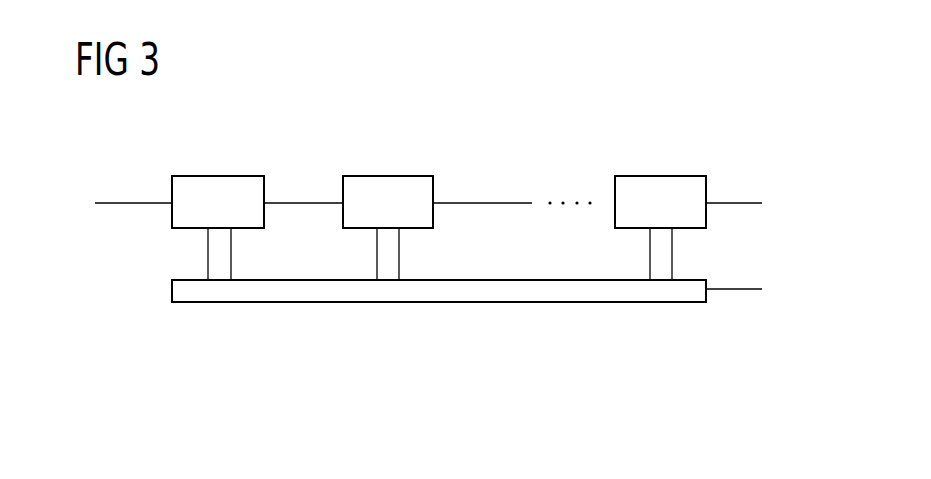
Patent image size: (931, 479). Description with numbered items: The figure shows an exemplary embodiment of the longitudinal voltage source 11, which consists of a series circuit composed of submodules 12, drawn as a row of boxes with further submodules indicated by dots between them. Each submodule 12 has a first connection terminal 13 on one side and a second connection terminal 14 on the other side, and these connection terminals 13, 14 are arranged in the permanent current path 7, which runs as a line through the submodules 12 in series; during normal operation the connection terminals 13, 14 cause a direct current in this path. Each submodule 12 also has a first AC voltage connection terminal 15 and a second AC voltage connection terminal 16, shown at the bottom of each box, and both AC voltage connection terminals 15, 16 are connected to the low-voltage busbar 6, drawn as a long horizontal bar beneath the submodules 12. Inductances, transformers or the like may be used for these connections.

The low-voltage busbar 6 is at (472, 302).
The permanent current path 7 is at (110, 205).
The longitudinal voltage source 11 is at (715, 132).
The submodule 12 is at (222, 176).
The first connection terminal 13 is at (172, 202).
The second connection terminal 14 is at (264, 201).
The first AC voltage connection terminal 15 is at (208, 256).
The second AC voltage connection terminal 16 is at (231, 256).